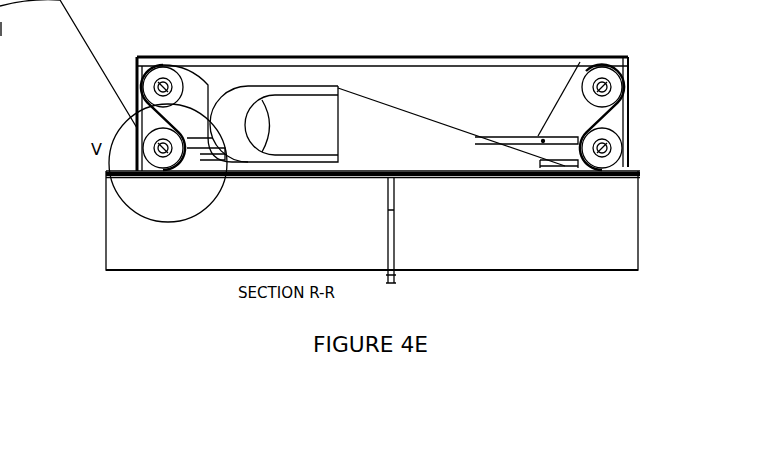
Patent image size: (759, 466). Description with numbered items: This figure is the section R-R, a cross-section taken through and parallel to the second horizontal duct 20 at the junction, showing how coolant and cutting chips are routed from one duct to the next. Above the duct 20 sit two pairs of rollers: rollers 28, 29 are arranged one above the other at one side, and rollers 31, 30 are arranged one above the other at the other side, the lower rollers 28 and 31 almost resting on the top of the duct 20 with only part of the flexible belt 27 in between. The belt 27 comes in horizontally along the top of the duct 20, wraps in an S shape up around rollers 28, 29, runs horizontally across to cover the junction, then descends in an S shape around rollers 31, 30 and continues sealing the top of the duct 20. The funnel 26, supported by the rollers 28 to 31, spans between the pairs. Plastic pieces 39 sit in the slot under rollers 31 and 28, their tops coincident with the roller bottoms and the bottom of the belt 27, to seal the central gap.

The second horizontal duct 20 is at (473, 236).
The funnel 26 is at (435, 120).
The belt 27 is at (403, 65).
The roller 28 is at (613, 154).
The roller 29 is at (612, 80).
The roller 30 is at (167, 75).
The roller 31 is at (152, 143).
The plastic piece 39 is at (158, 178).